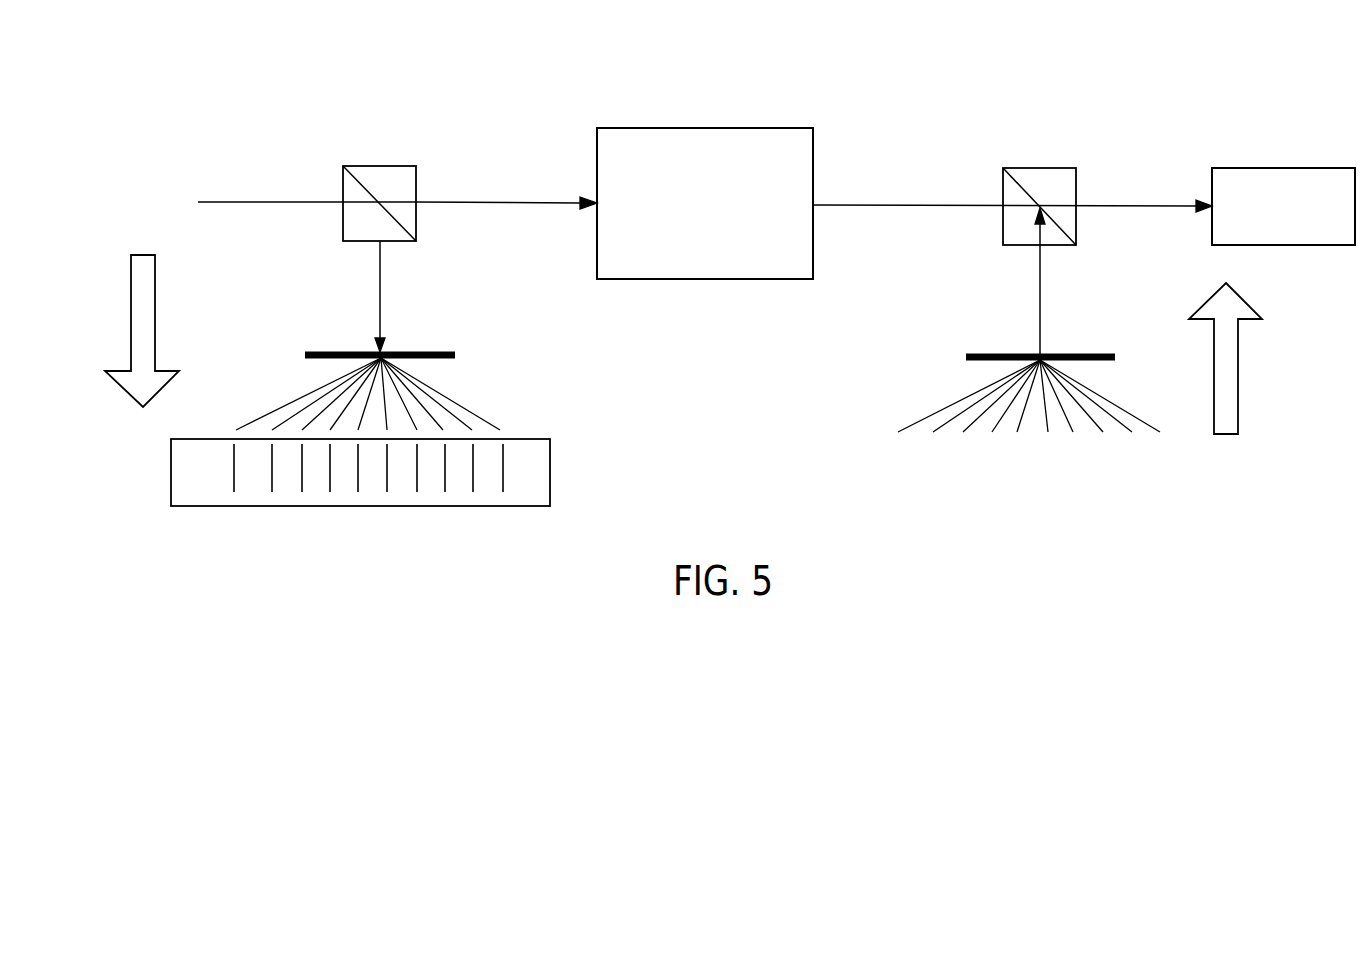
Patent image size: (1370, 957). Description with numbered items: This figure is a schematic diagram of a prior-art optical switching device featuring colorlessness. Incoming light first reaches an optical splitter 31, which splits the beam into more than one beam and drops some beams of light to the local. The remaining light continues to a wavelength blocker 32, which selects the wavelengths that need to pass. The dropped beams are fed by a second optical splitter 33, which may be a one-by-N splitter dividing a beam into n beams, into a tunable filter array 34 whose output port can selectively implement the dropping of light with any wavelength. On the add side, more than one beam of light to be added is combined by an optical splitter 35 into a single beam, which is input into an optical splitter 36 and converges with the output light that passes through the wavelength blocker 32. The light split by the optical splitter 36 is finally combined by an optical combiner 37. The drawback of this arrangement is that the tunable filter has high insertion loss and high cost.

The optical splitter 31 is at (416, 166).
The wavelength blocker 32 is at (733, 128).
The optical splitter 33 is at (453, 352).
The tunable filter array 34 is at (550, 452).
The optical splitter 35 is at (1114, 353).
The optical splitter 36 is at (1076, 168).
The optical combiner 37 is at (1245, 168).